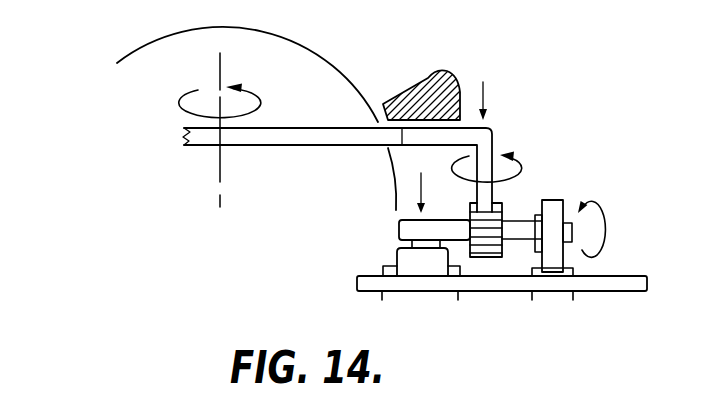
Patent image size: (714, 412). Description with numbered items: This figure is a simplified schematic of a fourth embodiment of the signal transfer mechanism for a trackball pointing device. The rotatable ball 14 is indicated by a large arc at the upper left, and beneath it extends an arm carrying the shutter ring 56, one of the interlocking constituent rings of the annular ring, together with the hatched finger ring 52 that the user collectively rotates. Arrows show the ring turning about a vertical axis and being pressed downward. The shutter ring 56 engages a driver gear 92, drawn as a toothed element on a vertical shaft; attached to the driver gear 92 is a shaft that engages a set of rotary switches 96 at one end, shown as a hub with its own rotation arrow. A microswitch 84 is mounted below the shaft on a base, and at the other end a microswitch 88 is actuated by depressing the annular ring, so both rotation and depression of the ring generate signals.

The rotatable ball 14 is at (112, 58).
The finger ring 52 is at (427, 90).
The shutter ring 56 is at (442, 137).
The microswitch 84 is at (418, 262).
The microswitch 88 is at (613, 282).
The driver gear 92 is at (489, 257).
The rotary switches 96 is at (553, 213).